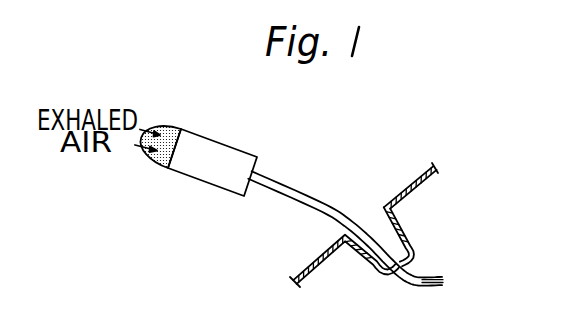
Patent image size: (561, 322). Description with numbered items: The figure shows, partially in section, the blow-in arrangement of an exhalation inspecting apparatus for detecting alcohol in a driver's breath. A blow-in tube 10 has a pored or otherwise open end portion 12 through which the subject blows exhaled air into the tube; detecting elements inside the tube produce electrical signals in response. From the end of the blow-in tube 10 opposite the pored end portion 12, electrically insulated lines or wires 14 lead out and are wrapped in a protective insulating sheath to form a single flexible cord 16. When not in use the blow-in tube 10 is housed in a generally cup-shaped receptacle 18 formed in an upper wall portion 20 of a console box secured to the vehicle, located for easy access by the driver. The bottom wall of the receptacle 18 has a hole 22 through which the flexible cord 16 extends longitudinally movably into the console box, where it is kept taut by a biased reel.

The blow-in tube 10 is at (212, 191).
The pored end portion 12 is at (180, 130).
The lines or wires 14 is at (444, 284).
The flexible cord 16 is at (293, 190).
The receptacle 18 is at (405, 229).
The upper wall portion 20 is at (409, 188).
The hole 22 is at (401, 275).